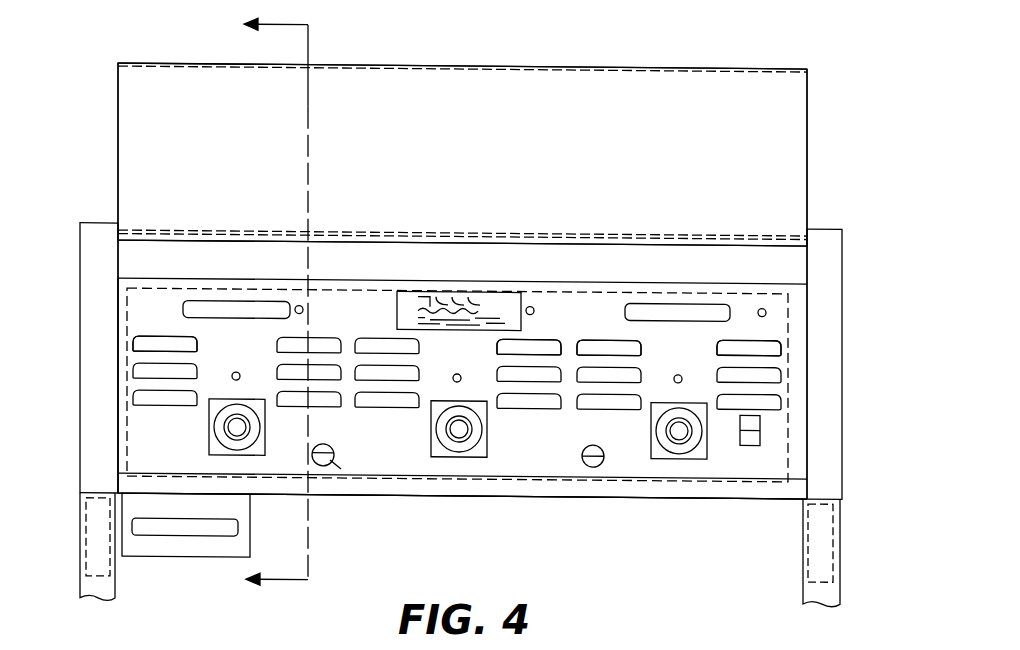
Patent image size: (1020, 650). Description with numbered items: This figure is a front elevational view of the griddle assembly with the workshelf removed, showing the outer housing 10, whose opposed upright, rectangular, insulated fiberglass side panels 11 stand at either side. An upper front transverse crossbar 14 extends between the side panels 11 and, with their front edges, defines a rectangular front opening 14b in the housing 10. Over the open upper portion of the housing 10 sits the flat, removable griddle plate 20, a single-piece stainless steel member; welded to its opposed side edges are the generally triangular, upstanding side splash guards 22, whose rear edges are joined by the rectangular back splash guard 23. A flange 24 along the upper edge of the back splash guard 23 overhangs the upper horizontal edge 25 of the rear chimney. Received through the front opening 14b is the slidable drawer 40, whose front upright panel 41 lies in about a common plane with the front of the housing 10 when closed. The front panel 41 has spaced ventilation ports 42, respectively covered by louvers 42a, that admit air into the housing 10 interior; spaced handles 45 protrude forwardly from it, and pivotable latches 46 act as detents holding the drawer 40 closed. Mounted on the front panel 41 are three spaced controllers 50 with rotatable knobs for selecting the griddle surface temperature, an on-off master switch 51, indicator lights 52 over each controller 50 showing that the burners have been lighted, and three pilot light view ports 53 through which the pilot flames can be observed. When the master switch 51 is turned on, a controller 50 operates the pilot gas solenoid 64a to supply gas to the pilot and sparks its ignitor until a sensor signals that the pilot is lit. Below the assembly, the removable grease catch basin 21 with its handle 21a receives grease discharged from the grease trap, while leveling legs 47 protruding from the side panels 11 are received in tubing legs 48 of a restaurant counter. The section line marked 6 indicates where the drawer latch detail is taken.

The section line 6- 6 is at (265, 304).
The outer housing 10 is at (76, 264).
The side panels 11 is at (80, 262).
The upper front transverse crossbar 14 is at (255, 252).
The front opening 14b is at (457, 485).
The griddle plate 20 is at (445, 229).
The grease catch basin 21 is at (205, 555).
The handle 21a is at (218, 525).
The side splash guards 22 is at (118, 129).
The back splash guard 23 is at (632, 89).
The flange 24 is at (512, 64).
The upper horizontal edge of chimney 25 is at (355, 278).
The drawer 40 is at (782, 419).
The front upright panel 41 is at (130, 455).
The ventilation ports 42 is at (150, 406).
The louvers 42a is at (145, 393).
The handles 45 is at (222, 305).
The pivotable latches 46 is at (332, 466).
The leveling legs 47 is at (88, 553).
The tubing legs 48 is at (112, 580).
The controllers 50 is at (209, 432).
The on-off master switch 51 is at (755, 436).
The indicator lights 52 is at (236, 371).
The pilot light view ports 53 is at (303, 307).
The pilot gas solenoid 64a is at (642, 494).